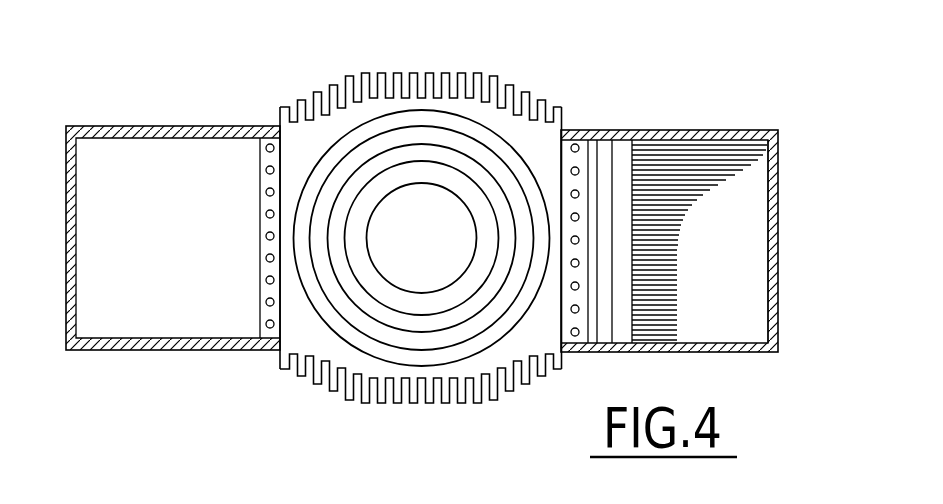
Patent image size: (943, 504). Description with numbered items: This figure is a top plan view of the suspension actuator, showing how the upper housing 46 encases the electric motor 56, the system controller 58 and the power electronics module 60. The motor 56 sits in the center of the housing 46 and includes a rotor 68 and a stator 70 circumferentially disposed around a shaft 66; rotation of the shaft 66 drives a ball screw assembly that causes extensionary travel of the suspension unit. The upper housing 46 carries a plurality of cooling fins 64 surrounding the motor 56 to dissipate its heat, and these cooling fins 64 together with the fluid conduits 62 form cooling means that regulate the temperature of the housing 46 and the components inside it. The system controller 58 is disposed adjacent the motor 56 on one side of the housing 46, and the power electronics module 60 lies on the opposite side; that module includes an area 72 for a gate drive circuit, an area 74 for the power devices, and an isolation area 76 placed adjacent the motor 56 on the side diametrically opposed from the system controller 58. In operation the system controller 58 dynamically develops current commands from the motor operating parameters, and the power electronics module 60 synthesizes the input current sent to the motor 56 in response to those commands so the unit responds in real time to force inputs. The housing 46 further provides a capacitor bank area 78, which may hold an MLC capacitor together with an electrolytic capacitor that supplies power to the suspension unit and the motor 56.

The upper housing 46 is at (780, 183).
The electric motor 56 is at (322, 144).
The system controller 58 is at (107, 126).
The power electronics module 60 is at (681, 127).
The fluid conduits 62 is at (263, 221).
The cooling fins 64 is at (399, 399).
The shaft 66 is at (443, 236).
The rotor 68 is at (385, 297).
The stator 70 is at (452, 355).
The gate drive circuit area 72 is at (622, 182).
The power devices area 74 is at (606, 143).
The isolation area 76 is at (591, 140).
The capacitor bank area 78 is at (747, 282).